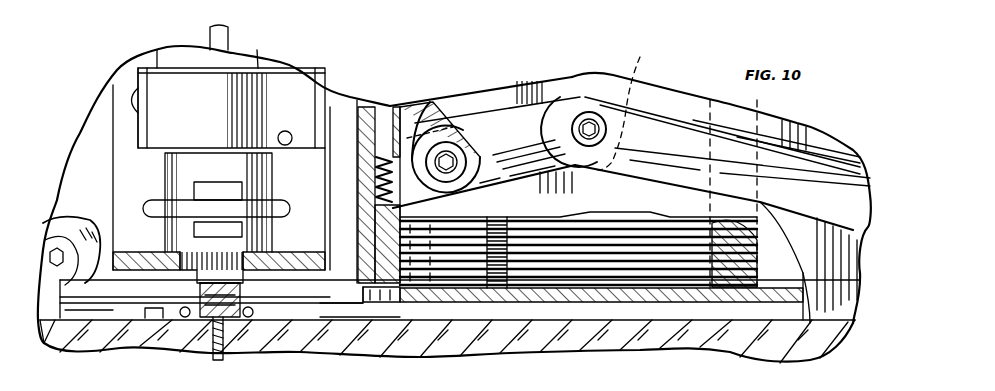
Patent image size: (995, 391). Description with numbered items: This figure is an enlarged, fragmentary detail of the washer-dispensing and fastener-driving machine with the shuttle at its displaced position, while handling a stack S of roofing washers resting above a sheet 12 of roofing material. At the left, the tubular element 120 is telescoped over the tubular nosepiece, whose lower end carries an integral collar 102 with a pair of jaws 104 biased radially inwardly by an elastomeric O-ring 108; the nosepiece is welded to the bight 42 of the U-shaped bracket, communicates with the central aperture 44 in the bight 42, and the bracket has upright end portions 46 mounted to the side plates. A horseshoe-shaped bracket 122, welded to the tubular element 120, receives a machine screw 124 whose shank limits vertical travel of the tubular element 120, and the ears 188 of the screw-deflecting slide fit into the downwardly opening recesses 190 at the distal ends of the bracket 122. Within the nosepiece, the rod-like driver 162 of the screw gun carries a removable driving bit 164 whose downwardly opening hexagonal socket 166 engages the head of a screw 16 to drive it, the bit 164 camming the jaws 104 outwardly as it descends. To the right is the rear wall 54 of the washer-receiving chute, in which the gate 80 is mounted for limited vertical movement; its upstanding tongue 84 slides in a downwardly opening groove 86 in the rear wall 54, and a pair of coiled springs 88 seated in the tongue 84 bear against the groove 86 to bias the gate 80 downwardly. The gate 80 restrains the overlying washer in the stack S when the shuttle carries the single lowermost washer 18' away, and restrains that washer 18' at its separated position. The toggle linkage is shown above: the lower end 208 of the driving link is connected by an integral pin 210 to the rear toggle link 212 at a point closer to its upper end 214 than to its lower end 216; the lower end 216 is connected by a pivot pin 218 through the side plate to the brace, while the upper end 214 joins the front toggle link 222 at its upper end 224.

The sheet of roofing material 12 is at (374, 345).
The screw 16 is at (222, 355).
The single washer 18' is at (335, 240).
The bight 42 is at (137, 258).
The central aperture 44 is at (188, 272).
The end portions 46 is at (120, 157).
The rear wall 54 is at (375, 107).
The gate 80 is at (393, 283).
The tongue 84 is at (368, 290).
The groove 86 is at (382, 160).
The coiled springs 88 is at (398, 127).
The integral collar 102 is at (178, 182).
The jaws 104 is at (207, 187).
The O-ring 108 is at (322, 150).
The tubular element 120 is at (172, 53).
The horseshoe-shaped bracket 122 is at (140, 133).
The machine screw 124 is at (138, 100).
The driver 162 is at (231, 37).
The driving bit 164 is at (200, 303).
The hexagonal socket 166 is at (247, 320).
The ears 188 is at (322, 97).
The recesses 190 is at (289, 132).
The lower end of driving link 208 is at (485, 115).
The pin 210 is at (444, 143).
The rear toggle link 212 is at (502, 127).
The upper end of rear toggle link 214 is at (640, 57).
The lower end of rear toggle link 216 is at (45, 215).
The pivot pin 218 is at (48, 340).
The front toggle link 222 is at (660, 133).
The upper end of front toggle link 224 is at (572, 108).
The stack S is at (616, 206).